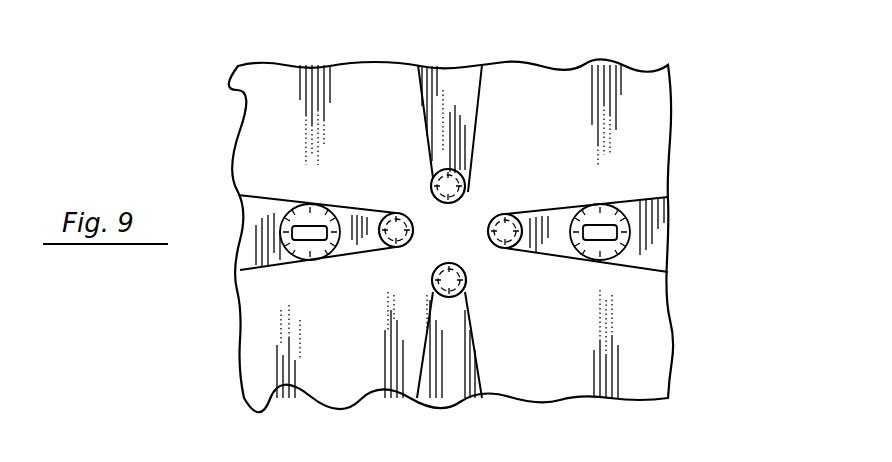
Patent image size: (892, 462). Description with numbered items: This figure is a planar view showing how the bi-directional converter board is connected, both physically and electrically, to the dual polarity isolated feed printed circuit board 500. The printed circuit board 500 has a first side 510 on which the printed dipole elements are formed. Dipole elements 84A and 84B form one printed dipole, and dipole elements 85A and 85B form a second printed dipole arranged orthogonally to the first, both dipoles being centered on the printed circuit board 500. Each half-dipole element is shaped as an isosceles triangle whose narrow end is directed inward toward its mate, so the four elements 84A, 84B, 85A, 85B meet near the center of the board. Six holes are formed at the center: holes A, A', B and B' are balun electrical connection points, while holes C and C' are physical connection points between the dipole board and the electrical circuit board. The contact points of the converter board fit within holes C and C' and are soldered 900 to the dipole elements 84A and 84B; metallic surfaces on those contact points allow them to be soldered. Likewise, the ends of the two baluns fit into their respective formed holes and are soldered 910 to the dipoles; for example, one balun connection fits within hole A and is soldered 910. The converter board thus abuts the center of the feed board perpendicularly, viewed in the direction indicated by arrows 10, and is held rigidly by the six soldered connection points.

The printed circuit board 500 is at (690, 306).
The first side 510 is at (662, 357).
The dipole element 84A is at (658, 250).
The dipole element 84B is at (240, 243).
The dipole element 85A is at (456, 85).
The dipole element 85B is at (460, 388).
The solder 900 is at (310, 207).
The solder 910 is at (493, 218).
The viewing direction 10 is at (540, 150).